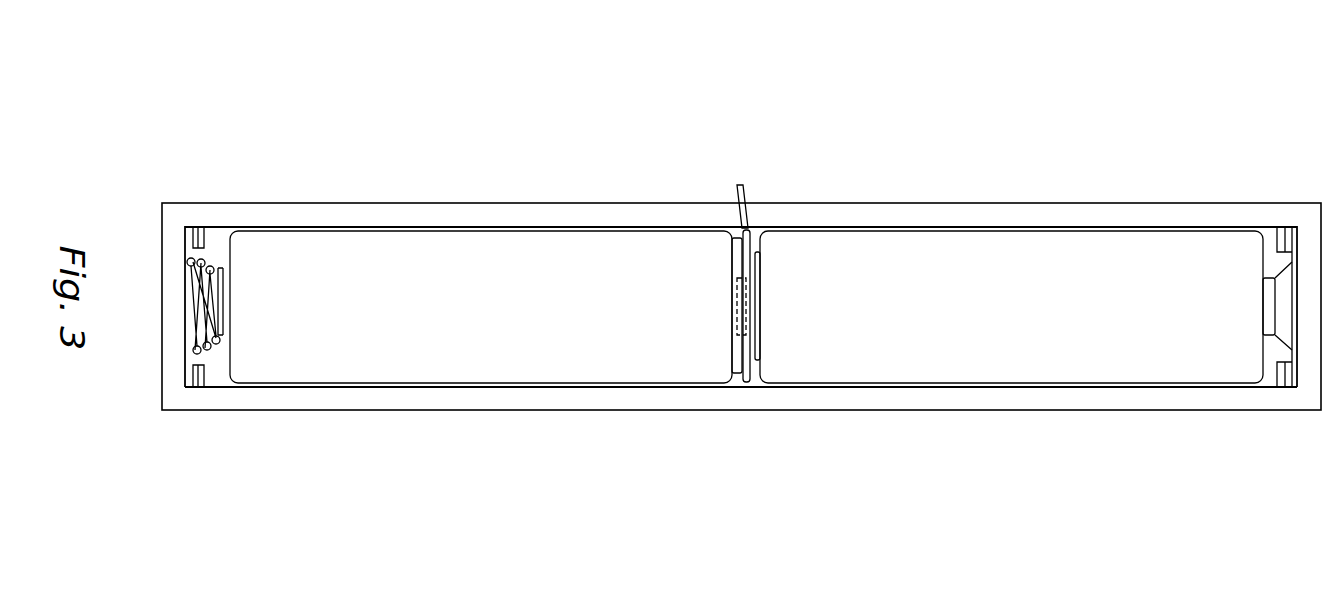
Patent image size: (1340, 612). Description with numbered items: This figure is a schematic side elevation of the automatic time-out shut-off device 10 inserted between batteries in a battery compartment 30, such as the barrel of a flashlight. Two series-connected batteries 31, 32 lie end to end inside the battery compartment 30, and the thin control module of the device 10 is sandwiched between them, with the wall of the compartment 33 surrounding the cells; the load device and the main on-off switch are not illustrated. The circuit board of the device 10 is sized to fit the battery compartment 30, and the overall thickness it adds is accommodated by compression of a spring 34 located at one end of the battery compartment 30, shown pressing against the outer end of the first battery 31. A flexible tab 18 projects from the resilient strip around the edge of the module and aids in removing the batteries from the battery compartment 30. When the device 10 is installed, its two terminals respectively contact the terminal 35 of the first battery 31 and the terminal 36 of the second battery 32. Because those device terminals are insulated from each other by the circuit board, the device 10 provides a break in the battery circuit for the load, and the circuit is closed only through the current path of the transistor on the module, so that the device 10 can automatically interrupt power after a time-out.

The automatic time-out shut-off device 10 is at (745, 387).
The flexible tab 18 is at (738, 185).
The battery compartment 30 is at (1063, 428).
The first battery 31 is at (590, 348).
The second battery 32 is at (925, 345).
The compartment wall 33 is at (805, 220).
The spring 34 is at (187, 366).
The terminal of battery 31 35 is at (735, 315).
The terminal of battery 32 36 is at (758, 317).